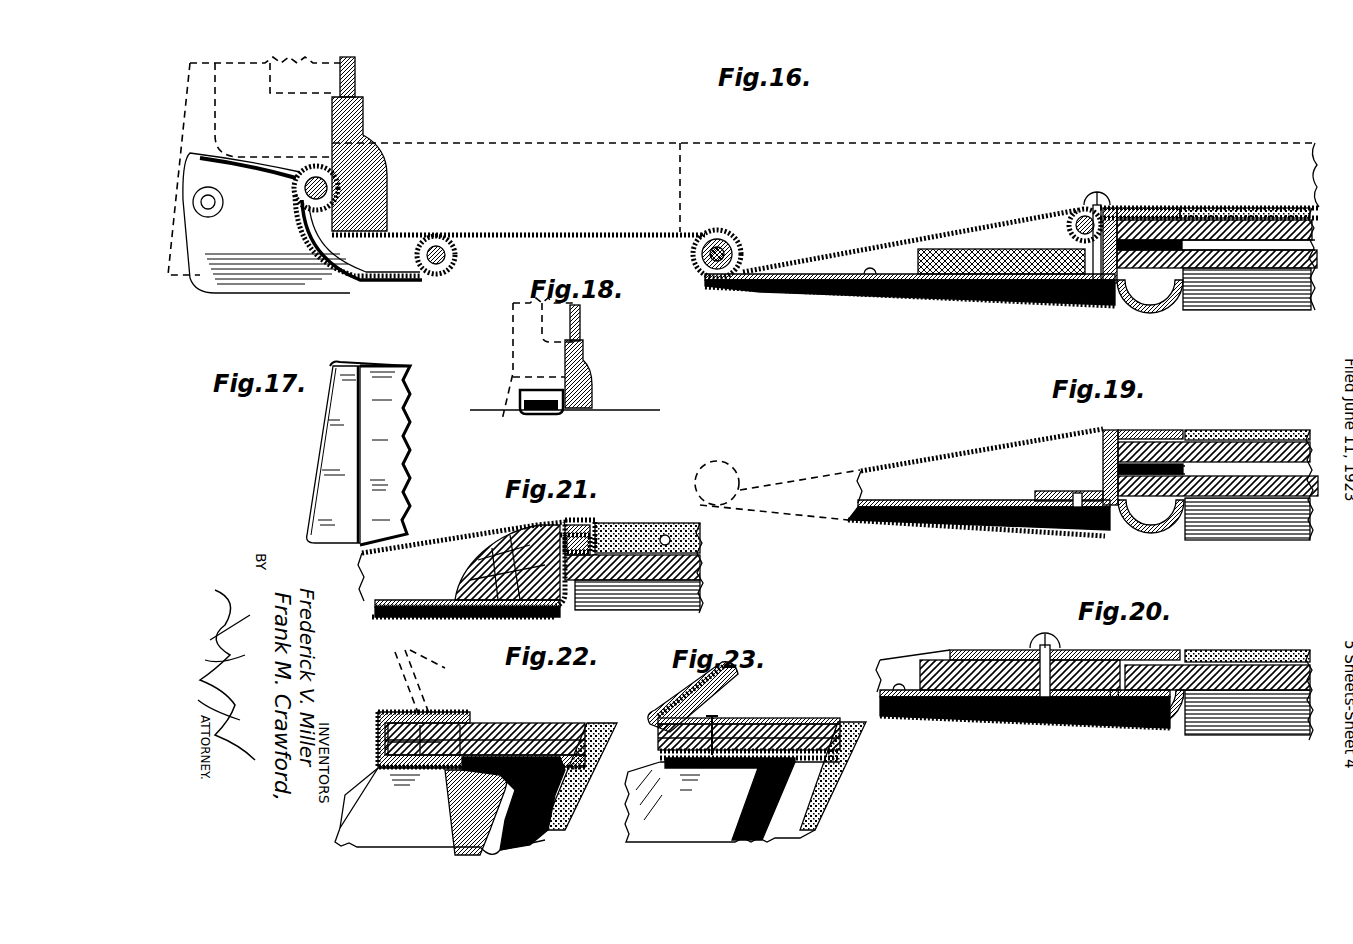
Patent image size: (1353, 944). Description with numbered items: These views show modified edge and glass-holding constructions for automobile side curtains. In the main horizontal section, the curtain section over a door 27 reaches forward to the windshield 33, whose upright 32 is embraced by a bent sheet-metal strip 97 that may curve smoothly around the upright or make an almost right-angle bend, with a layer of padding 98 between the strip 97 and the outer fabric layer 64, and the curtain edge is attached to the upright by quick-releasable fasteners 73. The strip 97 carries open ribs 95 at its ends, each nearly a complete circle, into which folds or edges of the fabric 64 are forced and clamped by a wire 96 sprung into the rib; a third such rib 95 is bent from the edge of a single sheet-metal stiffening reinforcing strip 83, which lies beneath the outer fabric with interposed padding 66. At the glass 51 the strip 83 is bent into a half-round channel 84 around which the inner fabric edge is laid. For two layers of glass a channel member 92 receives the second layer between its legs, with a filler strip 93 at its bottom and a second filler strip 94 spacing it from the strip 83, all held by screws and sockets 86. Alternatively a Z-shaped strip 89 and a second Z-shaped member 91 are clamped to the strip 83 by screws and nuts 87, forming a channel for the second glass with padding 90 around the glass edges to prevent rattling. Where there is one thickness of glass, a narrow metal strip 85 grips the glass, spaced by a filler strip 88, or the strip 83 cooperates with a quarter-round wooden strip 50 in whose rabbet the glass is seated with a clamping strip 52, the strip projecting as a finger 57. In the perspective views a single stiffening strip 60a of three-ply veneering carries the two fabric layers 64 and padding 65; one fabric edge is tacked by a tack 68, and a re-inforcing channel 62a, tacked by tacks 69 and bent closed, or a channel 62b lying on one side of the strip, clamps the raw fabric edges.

In FIG. 16, the door 27 is at (990, 140).
In FIG. 16, the windshield upright 32 is at (380, 190).
In FIG. 18, the windshield upright 32 is at (592, 390).
In FIG. 16, the windshield 33 is at (356, 78).
In FIG. 18, the windshield 33 is at (582, 322).
In FIG. 21, the rabbeted wooden strip 50 is at (503, 540).
In FIG. 16, the glass 51 is at (1235, 262).
In FIG. 19, the glass 51 is at (1240, 450).
In FIG. 20, the glass 51 is at (1282, 682).
In FIG. 21, the glass 51 is at (662, 535).
In FIG. 21, the clamping strip 52 is at (583, 528).
In FIG. 21, the finger 57 is at (382, 566).
In FIG. 22, the stiffening strip 60a is at (522, 740).
In FIG. 23, the stiffening strip 60a is at (790, 742).
In FIG. 22, the re-inforcing channel 62a is at (390, 715).
In FIG. 23, the re-inforcing channel 62b is at (695, 705).
In FIG. 16, the fabric layer 64 is at (425, 232).
In FIG. 17, the fabric layer 64 is at (325, 476).
In FIG. 19, the fabric layer 64 is at (942, 566).
In FIG. 21, the fabric layer 64 is at (430, 542).
In FIG. 22, the fabric layer 64 is at (488, 718).
In FIG. 23, the fabric layer 64 is at (732, 683).
In FIG. 22, the padding 65 is at (550, 815).
In FIG. 23, the padding 65 is at (795, 768).
In FIG. 16, the padding 66 is at (1058, 305).
In FIG. 19, the padding 66 is at (1028, 532).
In FIG. 20, the padding 66 is at (983, 724).
In FIG. 21, the padding 66 is at (378, 613).
In FIG. 22, the tack 68 is at (432, 722).
In FIG. 23, the tack 68 is at (720, 715).
In FIG. 22, the tack 69 is at (385, 738).
In FIG. 16, the fastener 73 is at (223, 212).
In FIG. 16, the stiffening reinforcing strip 83 is at (872, 292).
In FIG. 19, the stiffening reinforcing strip 83 is at (975, 500).
In FIG. 20, the stiffening reinforcing strip 83 is at (900, 720).
In FIG. 21, the stiffening reinforcing strip 83 is at (412, 600).
In FIG. 16, the half-round channel 84 is at (1160, 312).
In FIG. 19, the half-round channel 84 is at (1158, 533).
In FIG. 20, the half-round channel 84 is at (1142, 728).
In FIG. 20, the narrow metal strip 85 is at (1160, 650).
In FIG. 16, the screws and sockets 86 is at (1083, 205).
In FIG. 20, the screws and sockets 86 is at (1008, 725).
In FIG. 19, the screws and nuts 87 is at (1078, 492).
In FIG. 20, the filler strip 88 is at (972, 672).
In FIG. 19, the Z-shaped strip 89 is at (1165, 468).
In FIG. 19, the padding 90 is at (1112, 430).
In FIG. 19, the second Z-shaped member 91 is at (1105, 445).
In FIG. 16, the channel member 92 is at (1150, 208).
In FIG. 16, the filler strip 93 is at (1118, 208).
In FIG. 16, the filler strip 94 is at (1010, 302).
In FIG. 16, the open rib 95 is at (327, 190).
In FIG. 16, the wire 96 is at (330, 180).
In FIG. 16, the sheet-metal strip 97 is at (345, 288).
In FIG. 17, the sheet-metal strip 97 is at (348, 366).
In FIG. 18, the sheet-metal strip 97 is at (552, 415).
In FIG. 16, the padding 98 is at (382, 285).